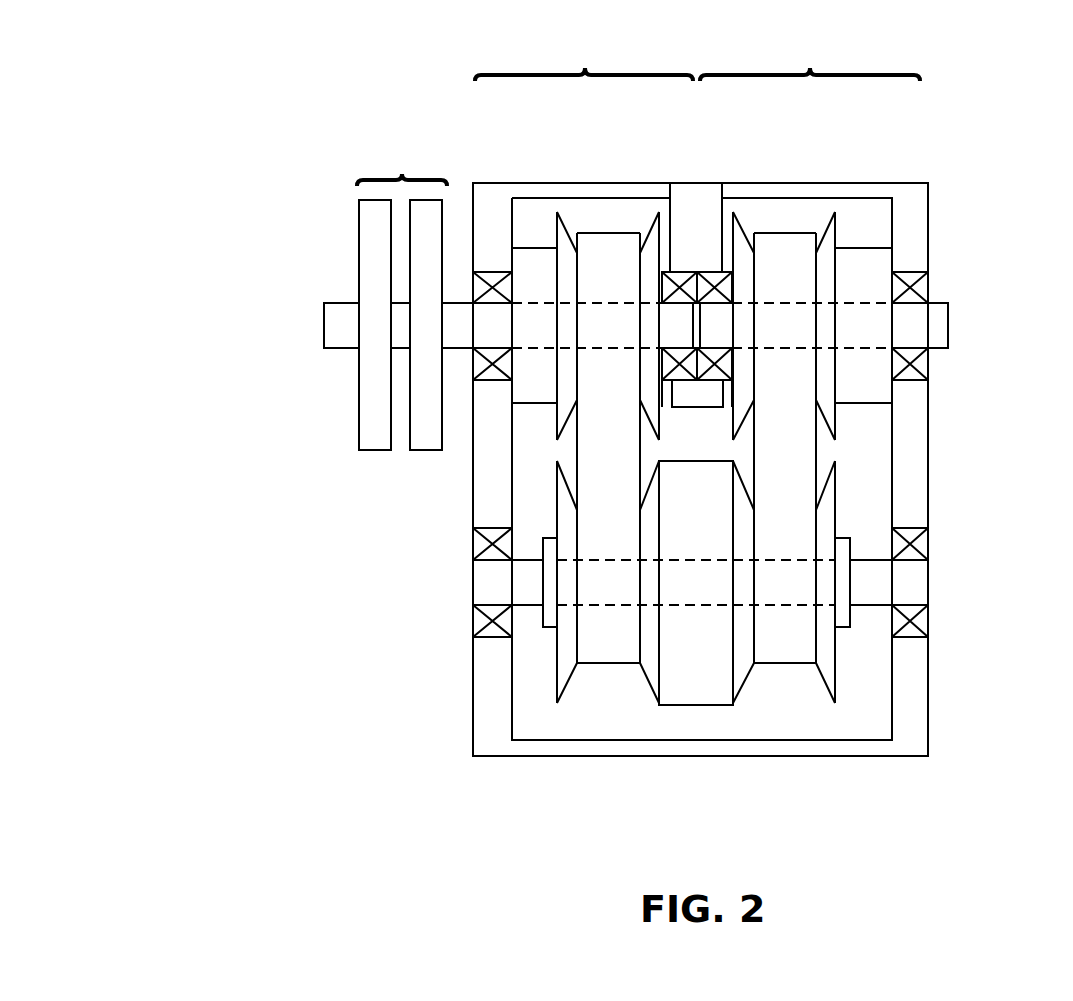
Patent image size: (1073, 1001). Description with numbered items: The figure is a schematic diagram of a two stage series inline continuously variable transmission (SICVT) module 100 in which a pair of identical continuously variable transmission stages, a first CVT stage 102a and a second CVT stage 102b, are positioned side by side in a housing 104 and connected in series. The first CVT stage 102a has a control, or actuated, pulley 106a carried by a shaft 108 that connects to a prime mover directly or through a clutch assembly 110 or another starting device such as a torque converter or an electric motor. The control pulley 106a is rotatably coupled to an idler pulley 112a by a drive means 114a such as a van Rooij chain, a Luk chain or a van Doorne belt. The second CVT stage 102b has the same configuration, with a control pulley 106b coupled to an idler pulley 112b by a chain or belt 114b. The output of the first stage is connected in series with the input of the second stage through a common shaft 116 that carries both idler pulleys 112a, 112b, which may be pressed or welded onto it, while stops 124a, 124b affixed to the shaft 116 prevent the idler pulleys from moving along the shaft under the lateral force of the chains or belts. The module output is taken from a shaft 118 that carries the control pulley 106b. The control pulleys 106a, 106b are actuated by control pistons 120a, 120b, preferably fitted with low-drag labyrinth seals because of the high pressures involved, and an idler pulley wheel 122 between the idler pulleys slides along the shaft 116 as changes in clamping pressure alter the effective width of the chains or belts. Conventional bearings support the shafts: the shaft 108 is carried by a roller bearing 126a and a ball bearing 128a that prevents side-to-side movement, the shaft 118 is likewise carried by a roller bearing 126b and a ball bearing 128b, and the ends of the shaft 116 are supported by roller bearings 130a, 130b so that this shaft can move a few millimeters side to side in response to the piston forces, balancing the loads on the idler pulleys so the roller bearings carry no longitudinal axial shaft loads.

The series inline continuously variable transmission module 100 is at (238, 142).
The first CVT stage 102a is at (584, 53).
The second CVT stage 102b is at (810, 53).
The housing 104 is at (880, 757).
The control pulley 106a is at (570, 225).
The control pulley 106b is at (827, 222).
The shaft 108 is at (458, 333).
The clutch assembly 110 is at (402, 290).
The idler pulley 112a is at (568, 670).
The idler pulley 112b is at (823, 687).
The drive means 114a is at (605, 665).
The drive means 114b is at (778, 665).
The shaft 116 is at (490, 582).
The shaft 118 is at (937, 325).
The control piston 120a is at (533, 387).
The control piston 120b is at (873, 392).
The idler pulley wheel 122 is at (677, 703).
The stop 124a is at (550, 635).
The stop 124b is at (847, 627).
The roller bearing 126a is at (680, 280).
The roller bearing 126b is at (712, 280).
The ball bearing 128a is at (492, 280).
The ball bearing 128b is at (930, 282).
The roller bearing 130a is at (488, 637).
The roller bearing 130b is at (912, 637).